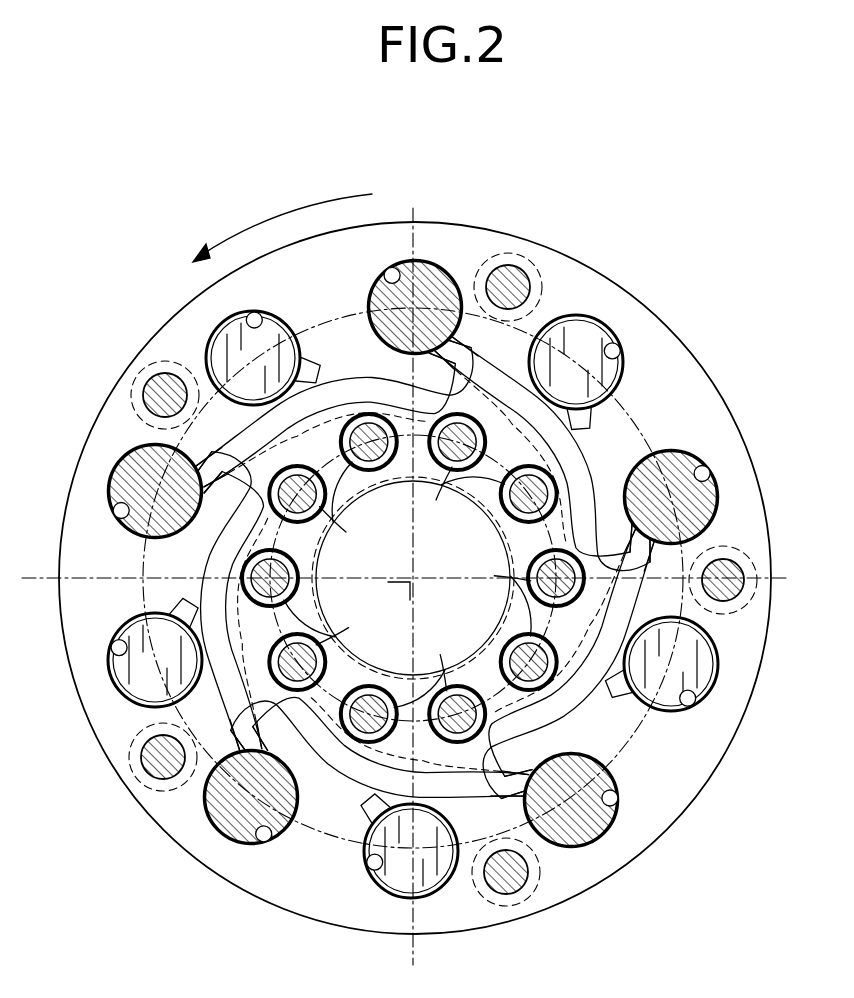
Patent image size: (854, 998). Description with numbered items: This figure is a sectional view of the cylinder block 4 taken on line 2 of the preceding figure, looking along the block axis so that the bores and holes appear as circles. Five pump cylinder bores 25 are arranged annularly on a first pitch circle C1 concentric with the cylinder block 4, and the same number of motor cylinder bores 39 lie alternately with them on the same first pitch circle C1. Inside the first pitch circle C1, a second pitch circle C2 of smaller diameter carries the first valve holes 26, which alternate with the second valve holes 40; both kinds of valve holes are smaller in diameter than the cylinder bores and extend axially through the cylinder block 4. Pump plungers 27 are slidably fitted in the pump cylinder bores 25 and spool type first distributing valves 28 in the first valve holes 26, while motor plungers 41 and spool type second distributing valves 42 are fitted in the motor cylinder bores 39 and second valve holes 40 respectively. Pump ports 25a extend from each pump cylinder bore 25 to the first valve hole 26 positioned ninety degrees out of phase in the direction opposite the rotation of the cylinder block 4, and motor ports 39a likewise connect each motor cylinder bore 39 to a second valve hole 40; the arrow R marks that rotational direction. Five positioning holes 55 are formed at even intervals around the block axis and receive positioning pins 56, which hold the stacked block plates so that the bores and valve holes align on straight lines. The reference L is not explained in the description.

The section line 2 is at (545, 628).
The cylinder block 4 is at (590, 288).
The pump cylinder bore 25 is at (384, 272).
The pump port 25a is at (240, 448).
The first valve hole 26 is at (270, 494).
The pump plunger 27 is at (171, 507).
The first distributing valve 28 is at (404, 528).
The motor cylinder bore 39 is at (260, 316).
The motor port 39a is at (316, 362).
The second valve hole 40 is at (317, 478).
The motor plunger 41 is at (269, 374).
The second distributing valve 42 is at (372, 462).
The positioning hole 55 is at (526, 280).
The positioning pin 56 is at (502, 254).
The first pitch circle C1 is at (640, 418).
The second pitch circle C2 is at (413, 578).
The reference line L is at (410, 574).
The rotational direction arrow R is at (282, 217).